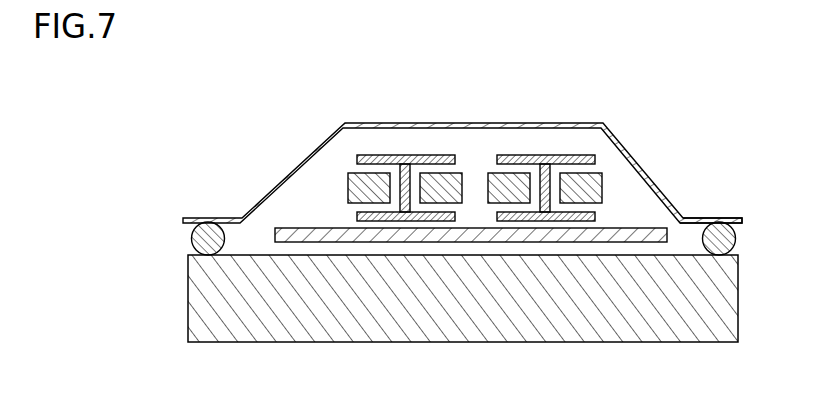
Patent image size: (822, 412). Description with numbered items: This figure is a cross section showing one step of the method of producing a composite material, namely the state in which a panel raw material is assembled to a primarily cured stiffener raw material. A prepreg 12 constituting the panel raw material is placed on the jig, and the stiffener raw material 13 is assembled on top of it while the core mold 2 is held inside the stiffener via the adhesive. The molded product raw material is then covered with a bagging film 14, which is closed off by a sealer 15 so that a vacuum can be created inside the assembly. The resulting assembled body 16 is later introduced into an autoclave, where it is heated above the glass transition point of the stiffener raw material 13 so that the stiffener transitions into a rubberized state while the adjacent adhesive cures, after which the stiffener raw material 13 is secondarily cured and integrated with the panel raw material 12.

The core mold 2 is at (597, 178).
The prepreg 12 is at (653, 238).
The stiffener raw material 13 is at (509, 132).
The bagging film 14 is at (670, 202).
The sealer 15 is at (736, 238).
The assembled body 16 is at (417, 122).